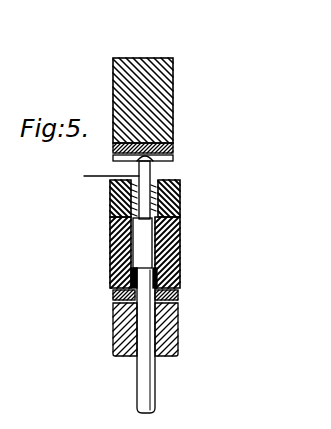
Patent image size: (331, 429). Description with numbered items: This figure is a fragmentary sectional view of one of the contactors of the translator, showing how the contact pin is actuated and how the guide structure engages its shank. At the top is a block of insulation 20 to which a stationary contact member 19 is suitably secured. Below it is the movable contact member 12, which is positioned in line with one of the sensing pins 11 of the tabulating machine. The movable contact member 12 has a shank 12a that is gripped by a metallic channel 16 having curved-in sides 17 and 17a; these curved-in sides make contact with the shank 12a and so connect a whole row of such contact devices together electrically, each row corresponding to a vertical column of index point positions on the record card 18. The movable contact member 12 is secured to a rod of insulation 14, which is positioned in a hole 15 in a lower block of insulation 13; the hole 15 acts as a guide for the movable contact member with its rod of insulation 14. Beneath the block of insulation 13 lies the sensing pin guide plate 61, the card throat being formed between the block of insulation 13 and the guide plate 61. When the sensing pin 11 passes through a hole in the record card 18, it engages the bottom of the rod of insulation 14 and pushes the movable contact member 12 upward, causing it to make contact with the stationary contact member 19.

The block of insulation 20 is at (176, 100).
The stationary contact member 19 is at (170, 148).
The movable contact member 12 is at (175, 157).
The shank 12a is at (92, 175).
The metallic channel 16 is at (150, 176).
The curved-in side 17 is at (181, 210).
The curved-in side 17a is at (131, 210).
The rod of insulation 14 is at (181, 243).
The block of insulation 13 is at (132, 265).
The hole 15 is at (181, 273).
The record card 18 is at (180, 297).
The sensing pin guide plate 61 is at (180, 338).
The sensing pin 11 is at (152, 381).